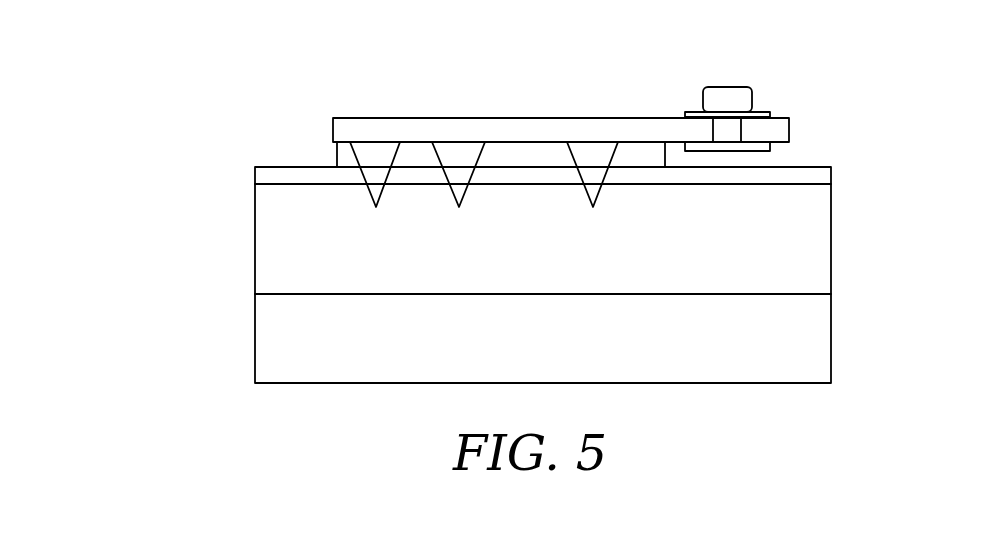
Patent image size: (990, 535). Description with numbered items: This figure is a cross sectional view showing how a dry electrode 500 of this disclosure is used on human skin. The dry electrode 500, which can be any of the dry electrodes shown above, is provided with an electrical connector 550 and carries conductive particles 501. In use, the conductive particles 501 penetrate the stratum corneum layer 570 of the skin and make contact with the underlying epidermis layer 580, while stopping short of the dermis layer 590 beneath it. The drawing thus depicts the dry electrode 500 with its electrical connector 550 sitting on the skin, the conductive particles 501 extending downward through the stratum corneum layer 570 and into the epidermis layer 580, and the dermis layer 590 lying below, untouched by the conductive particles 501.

The dry electrode 500 is at (863, 48).
The conductive particles 501 is at (382, 156).
The electrical connector 550 is at (730, 87).
The stratum corneum layer 570 is at (831, 173).
The epidermis layer 580 is at (831, 248).
The dermis layer 590 is at (831, 338).